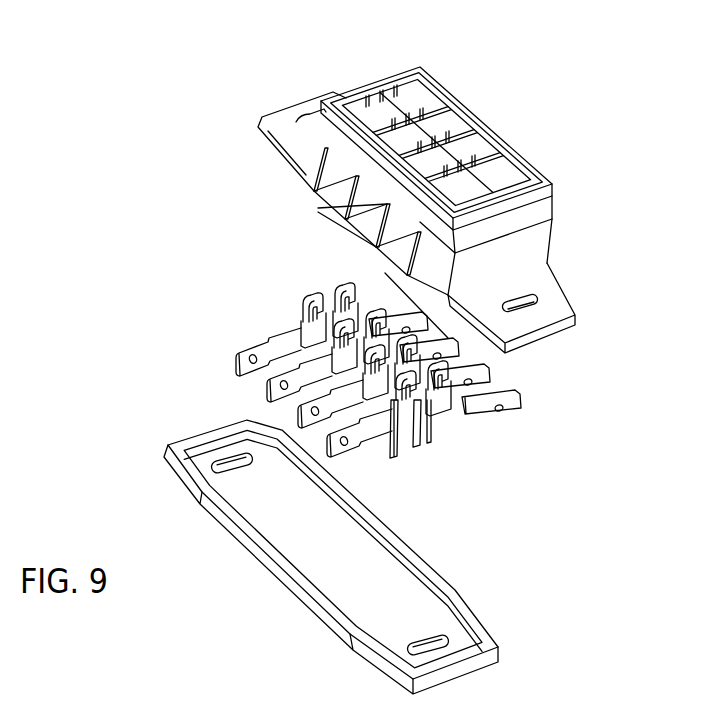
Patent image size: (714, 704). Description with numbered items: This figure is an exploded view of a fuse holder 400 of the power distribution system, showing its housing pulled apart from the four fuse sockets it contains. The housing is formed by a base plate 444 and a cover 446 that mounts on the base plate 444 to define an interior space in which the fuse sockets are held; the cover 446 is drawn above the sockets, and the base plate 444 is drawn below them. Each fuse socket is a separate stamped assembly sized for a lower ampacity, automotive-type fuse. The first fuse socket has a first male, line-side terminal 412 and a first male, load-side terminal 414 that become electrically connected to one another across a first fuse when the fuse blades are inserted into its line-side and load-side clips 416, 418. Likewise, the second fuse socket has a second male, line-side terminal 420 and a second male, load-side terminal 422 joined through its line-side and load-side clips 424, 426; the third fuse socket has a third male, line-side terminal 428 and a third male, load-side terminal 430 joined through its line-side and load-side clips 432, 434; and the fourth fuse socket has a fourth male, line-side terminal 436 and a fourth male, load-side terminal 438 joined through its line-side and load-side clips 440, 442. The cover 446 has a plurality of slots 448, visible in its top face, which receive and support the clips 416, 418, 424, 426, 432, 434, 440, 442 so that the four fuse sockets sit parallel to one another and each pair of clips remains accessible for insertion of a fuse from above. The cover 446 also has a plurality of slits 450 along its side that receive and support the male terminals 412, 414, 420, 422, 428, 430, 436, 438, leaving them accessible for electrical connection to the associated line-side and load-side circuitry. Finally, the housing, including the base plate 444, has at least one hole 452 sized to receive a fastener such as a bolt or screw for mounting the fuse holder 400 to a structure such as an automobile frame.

The fuse holder 400 is at (151, 60).
The first male, line-side terminal 412 is at (400, 303).
The first male, load-side terminal 414 is at (233, 357).
The line-side clip 416 is at (336, 292).
The load-side clip 418 is at (318, 297).
The second male, line-side terminal 420 is at (458, 363).
The second male, load-side terminal 422 is at (266, 388).
The line-side clip 424 is at (363, 287).
The load-side clip 426 is at (313, 333).
The third male, line-side terminal 428 is at (470, 385).
The third male, load-side terminal 430 is at (294, 412).
The line-side clip 432 is at (440, 393).
The load-side clip 434 is at (394, 428).
The fourth male, line-side terminal 436 is at (518, 408).
The fourth male, load-side terminal 438 is at (326, 440).
The line-side clip 440 is at (447, 378).
The load-side clip 442 is at (418, 418).
The base plate 444 is at (262, 570).
The cover 446 is at (552, 240).
The slots 448 is at (492, 180).
The slits 450 is at (387, 204).
The hole 452 is at (538, 300).